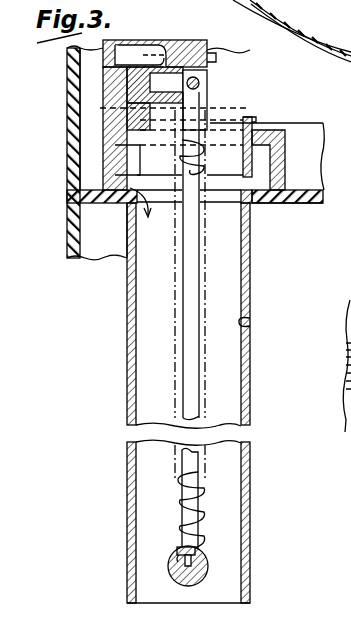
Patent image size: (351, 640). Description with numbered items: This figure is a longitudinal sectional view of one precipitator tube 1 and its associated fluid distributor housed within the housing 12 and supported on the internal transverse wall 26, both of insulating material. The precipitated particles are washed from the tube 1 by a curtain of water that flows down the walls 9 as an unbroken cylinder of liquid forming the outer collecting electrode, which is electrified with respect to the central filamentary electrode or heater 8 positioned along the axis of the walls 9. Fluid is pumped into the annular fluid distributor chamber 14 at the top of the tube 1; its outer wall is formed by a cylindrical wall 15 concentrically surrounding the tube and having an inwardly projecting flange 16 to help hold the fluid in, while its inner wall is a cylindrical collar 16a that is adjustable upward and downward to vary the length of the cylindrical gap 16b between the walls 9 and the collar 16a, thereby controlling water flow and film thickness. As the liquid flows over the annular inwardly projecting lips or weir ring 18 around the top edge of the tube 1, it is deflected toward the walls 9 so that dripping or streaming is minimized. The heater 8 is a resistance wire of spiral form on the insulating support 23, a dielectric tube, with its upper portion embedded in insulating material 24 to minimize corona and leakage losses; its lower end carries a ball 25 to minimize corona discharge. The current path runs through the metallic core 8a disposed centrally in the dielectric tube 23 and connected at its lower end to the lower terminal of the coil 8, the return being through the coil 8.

The precipitator tube 1 is at (250, 288).
The central filamentary electrode or heater 8 is at (200, 508).
The metallic core 8a is at (208, 565).
The walls 9 is at (250, 323).
The housing 12 is at (67, 82).
The annular fluid distributor chamber 14 is at (254, 167).
The cylindrical wall 15 is at (286, 165).
The inwardly projecting flange 16 is at (262, 135).
The cylindrical collar 16a is at (250, 117).
The cylindrical gap 16b is at (262, 203).
The weir ring (annular inwardly projecting lips) 18 is at (235, 197).
The insulating support 23 is at (190, 378).
The insulating material 24 is at (157, 40).
The ball 25 is at (212, 549).
The internal transverse wall 26 is at (310, 203).